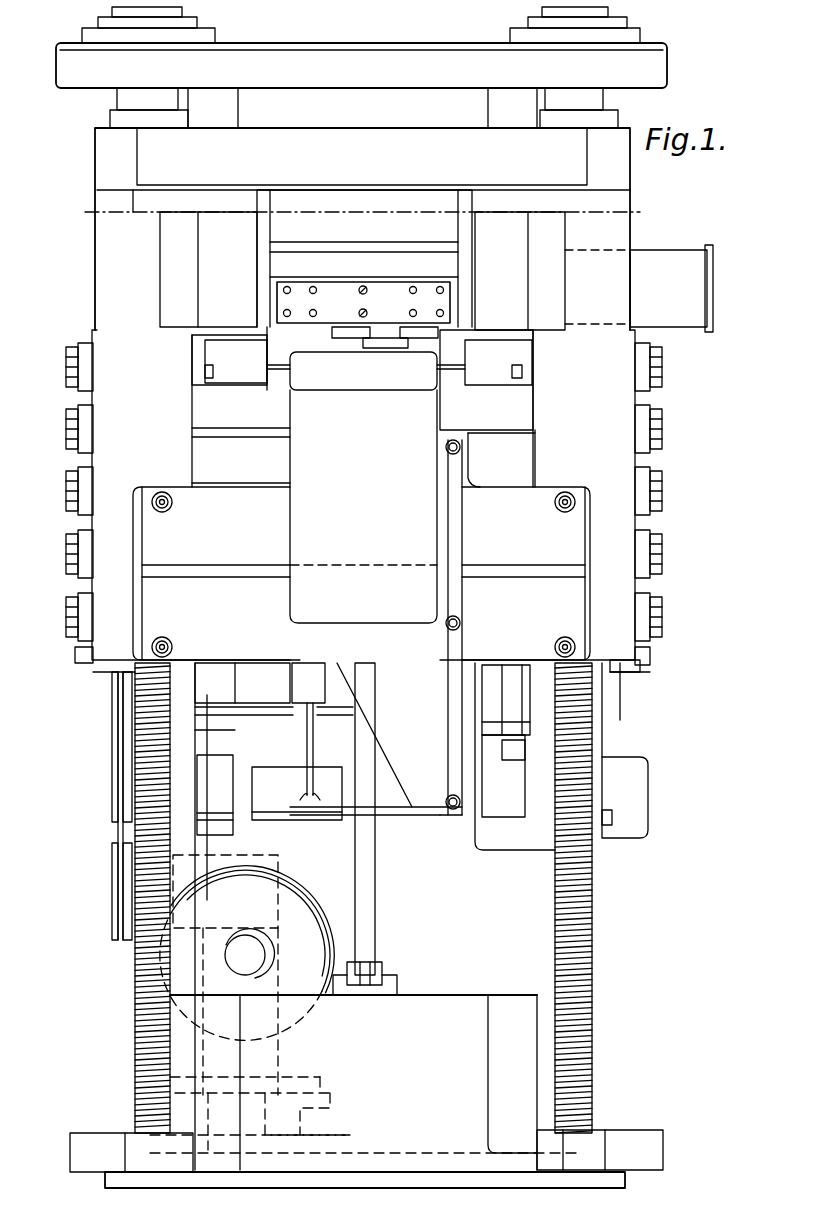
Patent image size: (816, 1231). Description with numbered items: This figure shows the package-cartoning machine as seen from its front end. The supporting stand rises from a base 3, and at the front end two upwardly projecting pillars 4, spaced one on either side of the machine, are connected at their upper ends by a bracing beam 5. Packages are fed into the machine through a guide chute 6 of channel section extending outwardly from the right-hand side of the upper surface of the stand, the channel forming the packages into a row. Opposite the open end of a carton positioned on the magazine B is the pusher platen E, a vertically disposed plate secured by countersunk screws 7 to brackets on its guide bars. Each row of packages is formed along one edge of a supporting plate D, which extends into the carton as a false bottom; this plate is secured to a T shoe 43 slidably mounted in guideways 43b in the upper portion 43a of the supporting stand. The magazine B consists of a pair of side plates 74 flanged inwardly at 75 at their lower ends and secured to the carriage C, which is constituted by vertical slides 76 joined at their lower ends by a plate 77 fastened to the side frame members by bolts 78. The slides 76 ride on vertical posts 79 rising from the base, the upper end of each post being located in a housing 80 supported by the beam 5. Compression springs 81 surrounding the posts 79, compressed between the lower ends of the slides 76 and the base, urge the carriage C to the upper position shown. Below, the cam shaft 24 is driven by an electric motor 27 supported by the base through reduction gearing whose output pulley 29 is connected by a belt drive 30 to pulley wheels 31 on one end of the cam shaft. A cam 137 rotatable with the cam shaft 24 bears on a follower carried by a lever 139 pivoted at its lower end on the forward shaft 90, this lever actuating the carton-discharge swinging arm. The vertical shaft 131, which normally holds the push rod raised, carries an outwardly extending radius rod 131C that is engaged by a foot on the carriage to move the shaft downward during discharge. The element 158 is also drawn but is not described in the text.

The base 3 is at (433, 1172).
The pillars 4 is at (228, 112).
The bracing beam 5 is at (361, 65).
The guide chute 6 is at (671, 288).
The countersunk screws 7 is at (438, 290).
The cam shaft 24 is at (274, 916).
The electric motor 27 is at (247, 975).
The output pulley 29 is at (112, 880).
The belt drive 30 is at (118, 797).
The pulley wheels 31 is at (112, 760).
The T shoe 43 is at (385, 337).
The upper portion of the supporting stand 43a is at (335, 345).
The guideways 43b is at (428, 356).
The side plates 74 is at (258, 230).
The inward flanges 75 is at (265, 322).
The vertical slides 76 is at (364, 507).
The plate 77 is at (361, 545).
The bolts 78 is at (172, 503).
The vertical posts 79 is at (135, 718).
The housing 80 is at (195, 30).
The compression springs 81 is at (138, 1000).
The forward shaft 90 is at (240, 775).
The vertical shaft 131 is at (375, 862).
The radius rod 131C is at (385, 968).
The cam 137 is at (297, 793).
The lever 139 is at (323, 748).
The coupling 158 is at (310, 688).
The magazine B is at (357, 218).
The carriage C is at (362, 394).
The supporting plate D is at (316, 330).
The pusher platen E is at (345, 292).